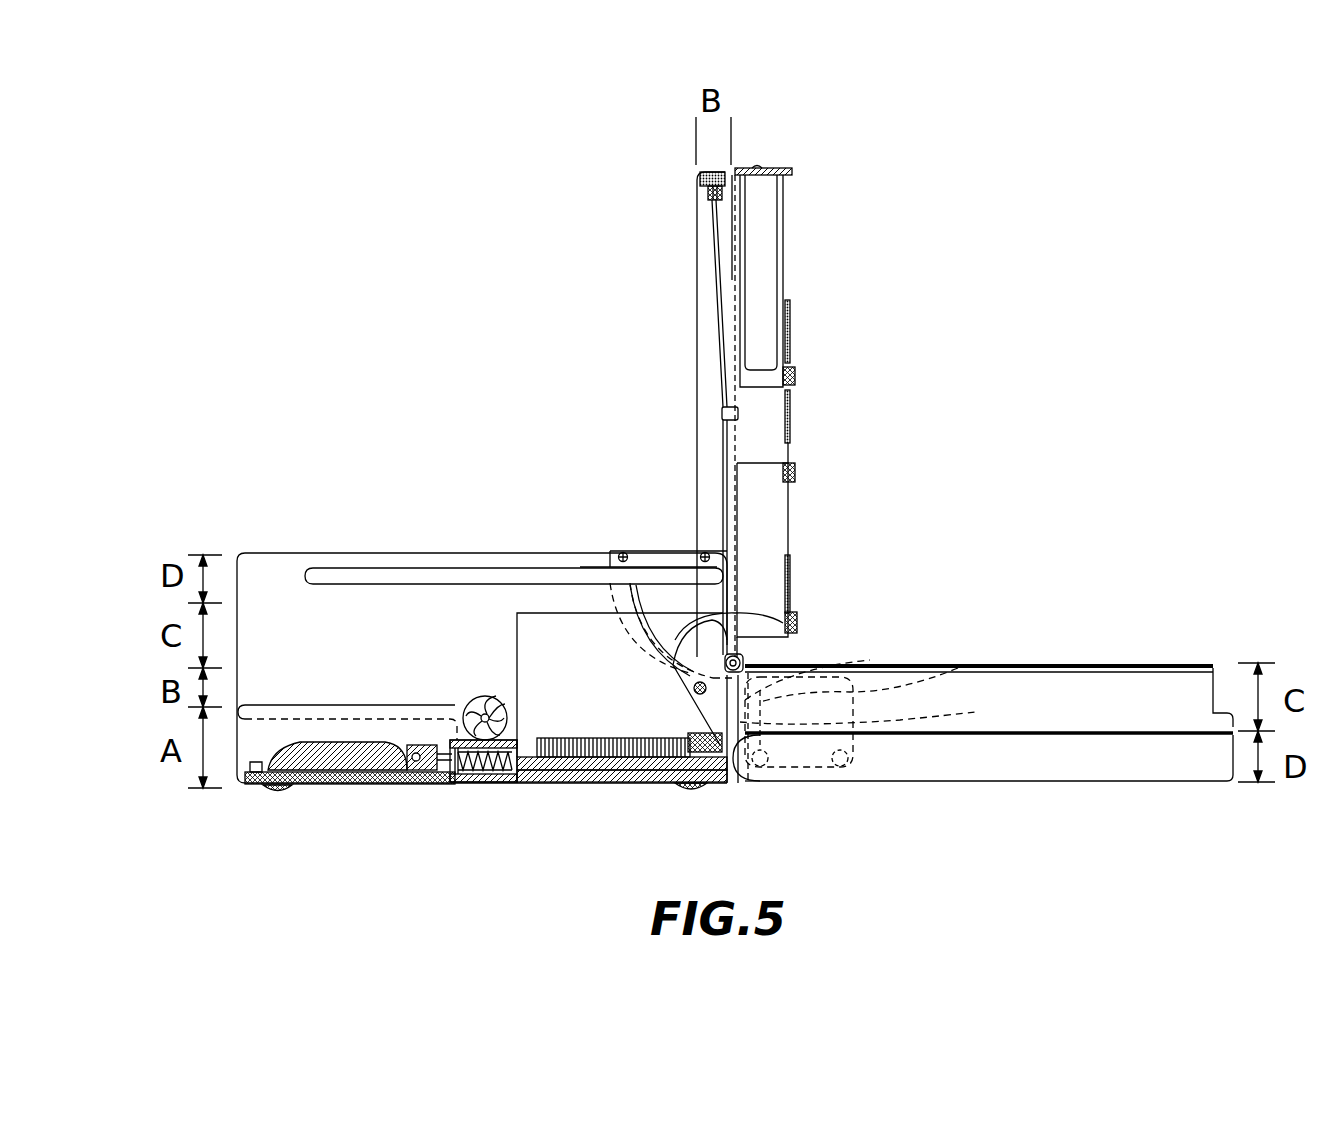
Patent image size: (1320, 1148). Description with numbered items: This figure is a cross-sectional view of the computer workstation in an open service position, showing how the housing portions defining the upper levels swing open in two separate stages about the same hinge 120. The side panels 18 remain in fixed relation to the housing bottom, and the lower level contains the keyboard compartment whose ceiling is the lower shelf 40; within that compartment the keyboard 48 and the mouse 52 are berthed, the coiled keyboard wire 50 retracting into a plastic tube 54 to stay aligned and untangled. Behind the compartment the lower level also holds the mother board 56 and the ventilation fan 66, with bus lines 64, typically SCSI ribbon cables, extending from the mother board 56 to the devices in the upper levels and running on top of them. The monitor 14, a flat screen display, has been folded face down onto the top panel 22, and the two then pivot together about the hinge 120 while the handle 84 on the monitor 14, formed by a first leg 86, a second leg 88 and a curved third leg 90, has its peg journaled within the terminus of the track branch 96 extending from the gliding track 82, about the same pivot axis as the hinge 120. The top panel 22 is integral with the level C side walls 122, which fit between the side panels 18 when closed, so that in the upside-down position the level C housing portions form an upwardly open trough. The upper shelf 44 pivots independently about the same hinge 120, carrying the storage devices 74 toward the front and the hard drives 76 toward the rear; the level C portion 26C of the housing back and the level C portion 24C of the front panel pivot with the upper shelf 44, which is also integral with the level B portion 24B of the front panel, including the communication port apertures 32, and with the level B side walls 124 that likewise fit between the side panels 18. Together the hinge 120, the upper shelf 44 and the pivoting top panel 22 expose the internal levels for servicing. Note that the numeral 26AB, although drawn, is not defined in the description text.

The monitor 14 is at (888, 786).
The side panels 18 is at (308, 553).
The top panel 22 is at (1045, 735).
The level B portion of the housing front panel 24B is at (698, 172).
The level C portion of the housing front panel 24C is at (765, 168).
The hinge block 26AB is at (700, 752).
The level C portion of the housing back 26C is at (740, 745).
The apertures 32 is at (716, 172).
The lower shelf 40 is at (268, 717).
The upper shelf 44 is at (735, 232).
The keyboard 48 is at (403, 783).
The keyboard wire 50 is at (490, 745).
The mouse 52 is at (283, 790).
The plastic tube 54 is at (452, 780).
The mother board 56 is at (578, 757).
The bus lines 64 is at (790, 328).
The ventilation fan 66 is at (476, 780).
The storage devices 74 is at (763, 263).
The hard drives 76 is at (770, 507).
The gliding track 82 is at (432, 575).
The handle 84 is at (873, 714).
The first leg 86 is at (830, 668).
The second leg 88 is at (870, 660).
The third leg 90 is at (960, 666).
The track branch 96 is at (618, 604).
The hinge 120 is at (798, 625).
The level C side walls 122 is at (1068, 665).
The level B side walls 124 is at (697, 258).